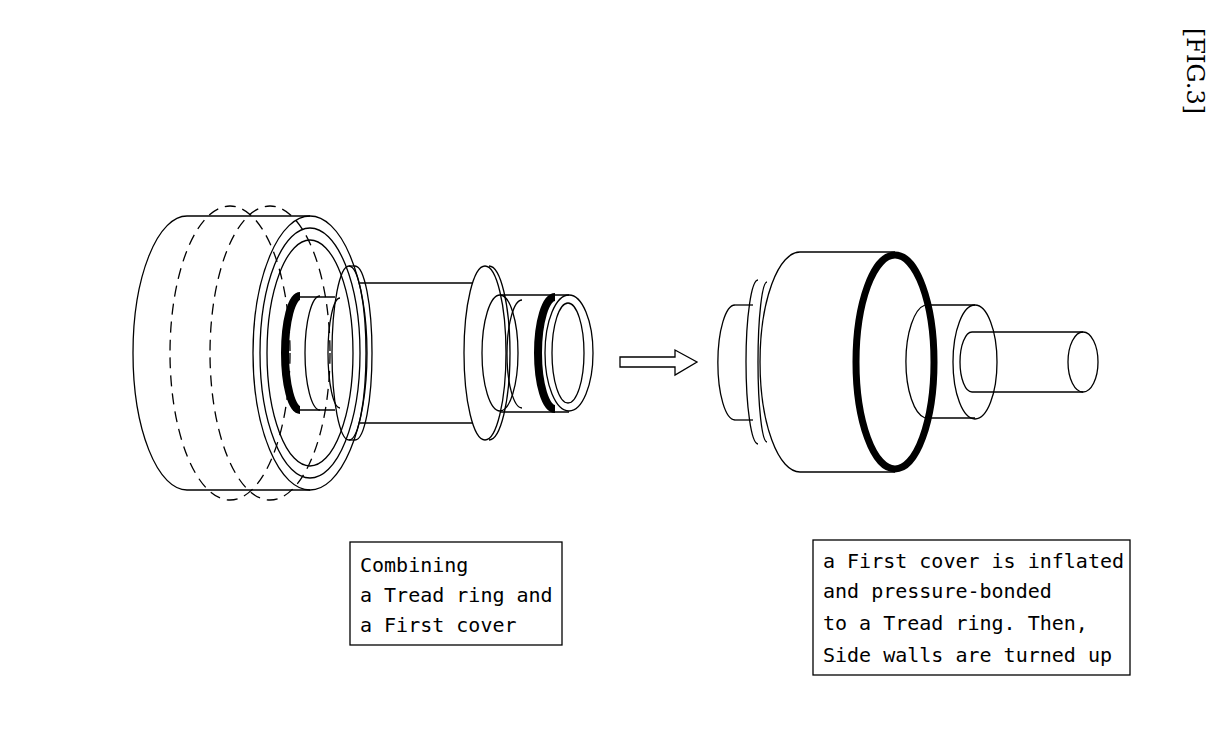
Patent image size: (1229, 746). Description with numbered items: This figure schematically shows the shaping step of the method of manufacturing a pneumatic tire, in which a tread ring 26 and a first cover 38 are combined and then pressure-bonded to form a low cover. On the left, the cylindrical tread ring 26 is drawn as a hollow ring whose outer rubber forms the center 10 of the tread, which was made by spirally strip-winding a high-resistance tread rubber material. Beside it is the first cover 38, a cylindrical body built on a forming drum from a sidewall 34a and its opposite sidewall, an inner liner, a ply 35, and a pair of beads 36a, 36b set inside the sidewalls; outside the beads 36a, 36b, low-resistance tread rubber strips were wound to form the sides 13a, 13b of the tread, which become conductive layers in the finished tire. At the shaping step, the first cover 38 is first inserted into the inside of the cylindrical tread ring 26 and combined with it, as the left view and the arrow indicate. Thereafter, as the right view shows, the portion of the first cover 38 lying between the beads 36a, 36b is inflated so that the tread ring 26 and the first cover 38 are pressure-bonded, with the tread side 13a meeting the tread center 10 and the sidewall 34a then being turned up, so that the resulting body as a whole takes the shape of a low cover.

The center of tread 10 is at (192, 227).
The tread ring 26 is at (309, 206).
The side of tread 13a is at (542, 343).
The side of tread 13b is at (277, 390).
The ply 35 is at (448, 297).
The first cover 38 is at (411, 280).
The bead 36a is at (502, 278).
The bead 36b is at (370, 270).
The sidewall 34a is at (520, 397).